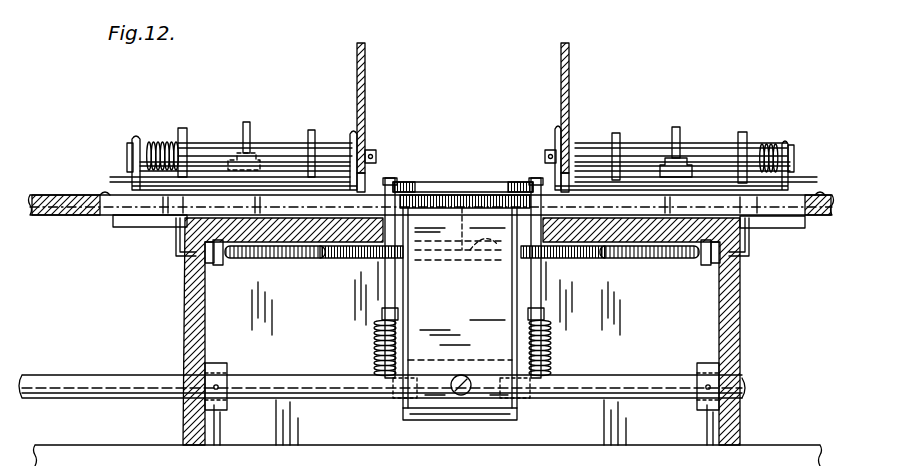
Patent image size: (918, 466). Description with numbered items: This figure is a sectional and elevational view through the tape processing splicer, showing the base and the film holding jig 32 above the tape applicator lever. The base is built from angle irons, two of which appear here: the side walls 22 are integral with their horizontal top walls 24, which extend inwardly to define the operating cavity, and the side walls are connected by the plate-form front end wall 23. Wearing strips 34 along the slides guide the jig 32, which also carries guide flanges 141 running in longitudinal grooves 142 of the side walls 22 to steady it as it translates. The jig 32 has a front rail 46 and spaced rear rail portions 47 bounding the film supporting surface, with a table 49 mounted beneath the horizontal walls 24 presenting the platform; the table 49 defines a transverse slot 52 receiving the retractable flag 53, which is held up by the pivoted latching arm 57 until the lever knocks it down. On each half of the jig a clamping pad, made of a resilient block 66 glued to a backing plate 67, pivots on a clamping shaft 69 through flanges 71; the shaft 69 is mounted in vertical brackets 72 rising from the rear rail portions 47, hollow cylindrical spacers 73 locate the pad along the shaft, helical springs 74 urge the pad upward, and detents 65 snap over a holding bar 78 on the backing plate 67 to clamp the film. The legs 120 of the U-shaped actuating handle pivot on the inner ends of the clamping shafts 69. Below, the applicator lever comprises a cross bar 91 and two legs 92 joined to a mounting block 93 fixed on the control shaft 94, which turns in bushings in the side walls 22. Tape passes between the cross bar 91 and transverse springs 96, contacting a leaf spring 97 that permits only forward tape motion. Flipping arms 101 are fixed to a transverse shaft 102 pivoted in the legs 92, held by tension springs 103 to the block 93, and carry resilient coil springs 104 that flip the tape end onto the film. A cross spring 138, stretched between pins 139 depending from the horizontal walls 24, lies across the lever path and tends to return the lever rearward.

The side walls 22 is at (182, 295).
The front end wall 23 is at (672, 339).
The horizontal top walls 24 is at (265, 257).
The film holding jig 32 is at (53, 187).
The wearing strips 34 is at (307, 254).
The front rail 46 is at (42, 193).
The rear rail portions 47 is at (90, 203).
The table 49 is at (417, 258).
The transverse slot 52 is at (473, 256).
The retractable flag 53 is at (453, 182).
The latching arm 57 is at (463, 253).
The detents 65 is at (248, 118).
The block of resilient material 66 is at (110, 203).
The backing plate 67 is at (112, 178).
The clamping shaft 69 is at (127, 155).
The flanges 71 is at (188, 142).
The vertical brackets 72 is at (138, 138).
The hollow cylindrical spacers 73 is at (147, 140).
The helical springs 74 is at (180, 133).
The holding bar 78 is at (240, 153).
The cross bar 91 is at (433, 182).
The legs 92 is at (378, 350).
The mounting block 93 is at (482, 422).
The control shaft 94 is at (120, 373).
The transverse springs 96 is at (450, 208).
The leaf spring 97 is at (475, 321).
The flipping arms 101 is at (390, 173).
The transverse shaft 102 is at (378, 262).
The tension springs 103 is at (375, 337).
The resilient coil springs 104 is at (412, 180).
The legs 120 is at (365, 52).
The cross spring 138 is at (290, 262).
The pins 139 is at (222, 264).
The guide flanges 141 is at (177, 233).
The longitudinal grooves 142 is at (173, 263).